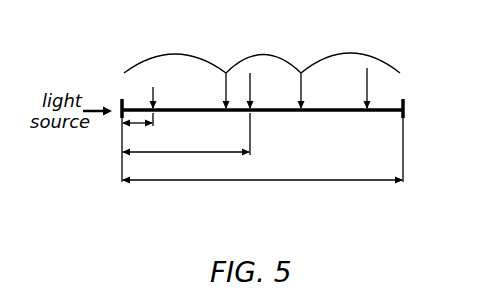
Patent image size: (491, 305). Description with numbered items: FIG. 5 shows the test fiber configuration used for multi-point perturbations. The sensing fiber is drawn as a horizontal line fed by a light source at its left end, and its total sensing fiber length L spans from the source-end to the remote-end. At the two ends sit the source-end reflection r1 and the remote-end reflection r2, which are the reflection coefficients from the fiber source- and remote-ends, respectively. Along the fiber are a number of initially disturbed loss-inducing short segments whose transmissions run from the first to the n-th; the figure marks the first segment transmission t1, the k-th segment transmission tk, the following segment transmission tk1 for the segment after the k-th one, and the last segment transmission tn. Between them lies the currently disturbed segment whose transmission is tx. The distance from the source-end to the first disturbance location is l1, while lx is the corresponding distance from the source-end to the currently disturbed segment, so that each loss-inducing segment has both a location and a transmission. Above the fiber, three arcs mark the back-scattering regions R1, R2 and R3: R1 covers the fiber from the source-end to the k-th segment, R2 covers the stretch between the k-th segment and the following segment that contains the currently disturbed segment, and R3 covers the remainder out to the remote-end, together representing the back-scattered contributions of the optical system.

The source-end reflection r1 is at (126, 98).
The remote-end reflection r2 is at (412, 98).
The transmission of first initially disturbed loss-inducing segment t1 is at (164, 93).
The transmission of k-th initially disturbed loss-inducing segment tk is at (235, 90).
The transmission of currently disturbed segment tx is at (259, 90).
The transmission of (k+1)-th initially disturbed loss-inducing segment tk1 is at (321, 90).
The transmission of n-th initially disturbed loss-inducing segment tn is at (378, 88).
The back-scattering coefficient of first fiber region R1 is at (146, 34).
The back-scattering coefficient of second fiber region R2 is at (224, 34).
The back-scattering coefficient of third fiber region R3 is at (314, 34).
The distance from source-end to disturbance location l1 is at (137, 138).
The distance from source-end to currently disturbed segment lx is at (186, 166).
The total sensing fiber length L is at (262, 194).